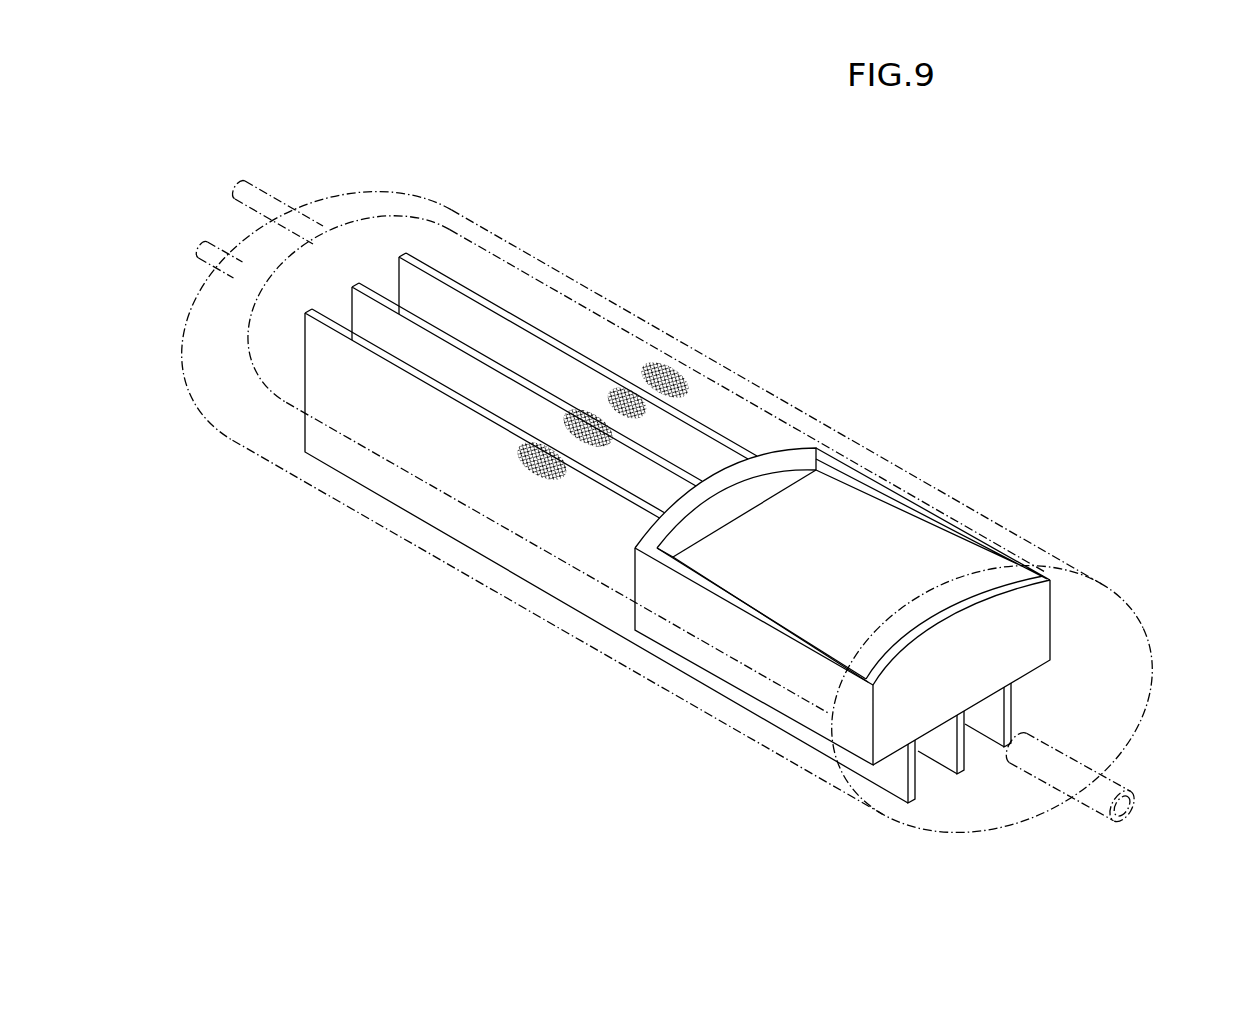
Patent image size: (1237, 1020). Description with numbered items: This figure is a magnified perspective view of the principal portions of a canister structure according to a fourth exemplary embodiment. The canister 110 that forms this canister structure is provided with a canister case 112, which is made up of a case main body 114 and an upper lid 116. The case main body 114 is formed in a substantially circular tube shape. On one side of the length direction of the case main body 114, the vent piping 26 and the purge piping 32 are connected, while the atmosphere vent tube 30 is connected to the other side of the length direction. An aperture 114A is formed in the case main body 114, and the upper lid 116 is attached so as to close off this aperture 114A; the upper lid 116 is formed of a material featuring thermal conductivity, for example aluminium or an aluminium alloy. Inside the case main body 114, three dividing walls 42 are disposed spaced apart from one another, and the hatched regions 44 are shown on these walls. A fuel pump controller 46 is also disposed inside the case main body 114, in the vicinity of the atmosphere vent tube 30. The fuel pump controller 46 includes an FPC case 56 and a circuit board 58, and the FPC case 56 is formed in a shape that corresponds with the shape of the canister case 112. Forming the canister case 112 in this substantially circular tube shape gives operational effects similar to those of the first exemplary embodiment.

The vent piping 26 is at (288, 205).
The atmosphere vent tube 30 is at (1146, 790).
The purge piping 32 is at (208, 262).
The dividing walls 42 is at (404, 255).
The deposits on fins 44 is at (573, 413).
The fuel pump controller 46 is at (1054, 614).
The FPC case 56 is at (1055, 645).
The circuit board 58 is at (850, 530).
The canister 110 is at (811, 238).
The canister case 112 is at (787, 362).
The case main body 114 is at (831, 431).
The aperture 114A is at (496, 254).
The upper lid 116 is at (572, 290).